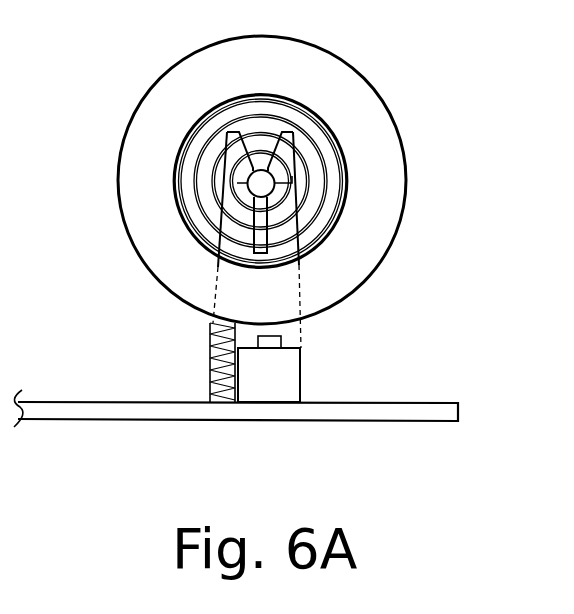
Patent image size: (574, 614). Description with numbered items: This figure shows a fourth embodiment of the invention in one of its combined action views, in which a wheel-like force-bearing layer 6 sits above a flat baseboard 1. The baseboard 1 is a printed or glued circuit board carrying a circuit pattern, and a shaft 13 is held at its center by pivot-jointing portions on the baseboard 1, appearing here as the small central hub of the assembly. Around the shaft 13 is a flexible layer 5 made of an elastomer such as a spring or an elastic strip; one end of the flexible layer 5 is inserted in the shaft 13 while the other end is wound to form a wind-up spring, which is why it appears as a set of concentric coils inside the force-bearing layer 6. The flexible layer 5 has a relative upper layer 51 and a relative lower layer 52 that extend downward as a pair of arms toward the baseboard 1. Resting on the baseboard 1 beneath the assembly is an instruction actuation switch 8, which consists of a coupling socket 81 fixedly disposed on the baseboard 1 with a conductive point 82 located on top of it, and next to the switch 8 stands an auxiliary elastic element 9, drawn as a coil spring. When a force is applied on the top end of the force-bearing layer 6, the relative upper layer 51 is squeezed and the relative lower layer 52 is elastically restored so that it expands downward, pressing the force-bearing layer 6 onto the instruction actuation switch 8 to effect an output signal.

The baseboard 1 is at (428, 410).
The flexible layer 5 is at (323, 153).
The force-bearing layer 6 is at (342, 75).
The instruction actuation switch 8 is at (312, 408).
The auxiliary elastic element 9 is at (212, 360).
The shaft 13 is at (263, 186).
The relative upper layer 51 is at (253, 118).
The relative lower layer 52 is at (232, 243).
The coupling socket 81 is at (265, 392).
The conductive point 82 is at (270, 341).